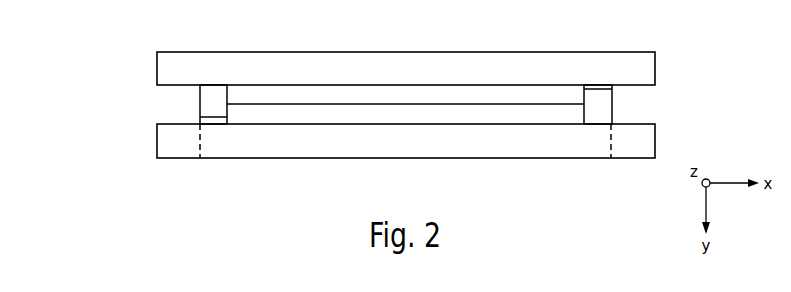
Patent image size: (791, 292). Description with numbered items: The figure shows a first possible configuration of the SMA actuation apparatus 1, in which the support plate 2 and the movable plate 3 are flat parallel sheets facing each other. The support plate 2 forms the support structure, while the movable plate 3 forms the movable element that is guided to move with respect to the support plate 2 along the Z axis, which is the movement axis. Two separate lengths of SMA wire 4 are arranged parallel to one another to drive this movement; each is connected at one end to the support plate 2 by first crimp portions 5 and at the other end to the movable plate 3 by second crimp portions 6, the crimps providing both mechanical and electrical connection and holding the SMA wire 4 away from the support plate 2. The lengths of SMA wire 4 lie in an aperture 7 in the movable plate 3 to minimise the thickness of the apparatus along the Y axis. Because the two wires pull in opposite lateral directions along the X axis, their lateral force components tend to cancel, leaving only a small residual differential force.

The SMA actuation apparatus 1 is at (124, 104).
The support plate 2 is at (275, 73).
The movable plate 3 is at (354, 140).
The SMA wire 4 is at (378, 102).
The first crimp portions 5 is at (212, 98).
The second crimp portions 6 is at (212, 122).
The aperture 7 is at (612, 139).